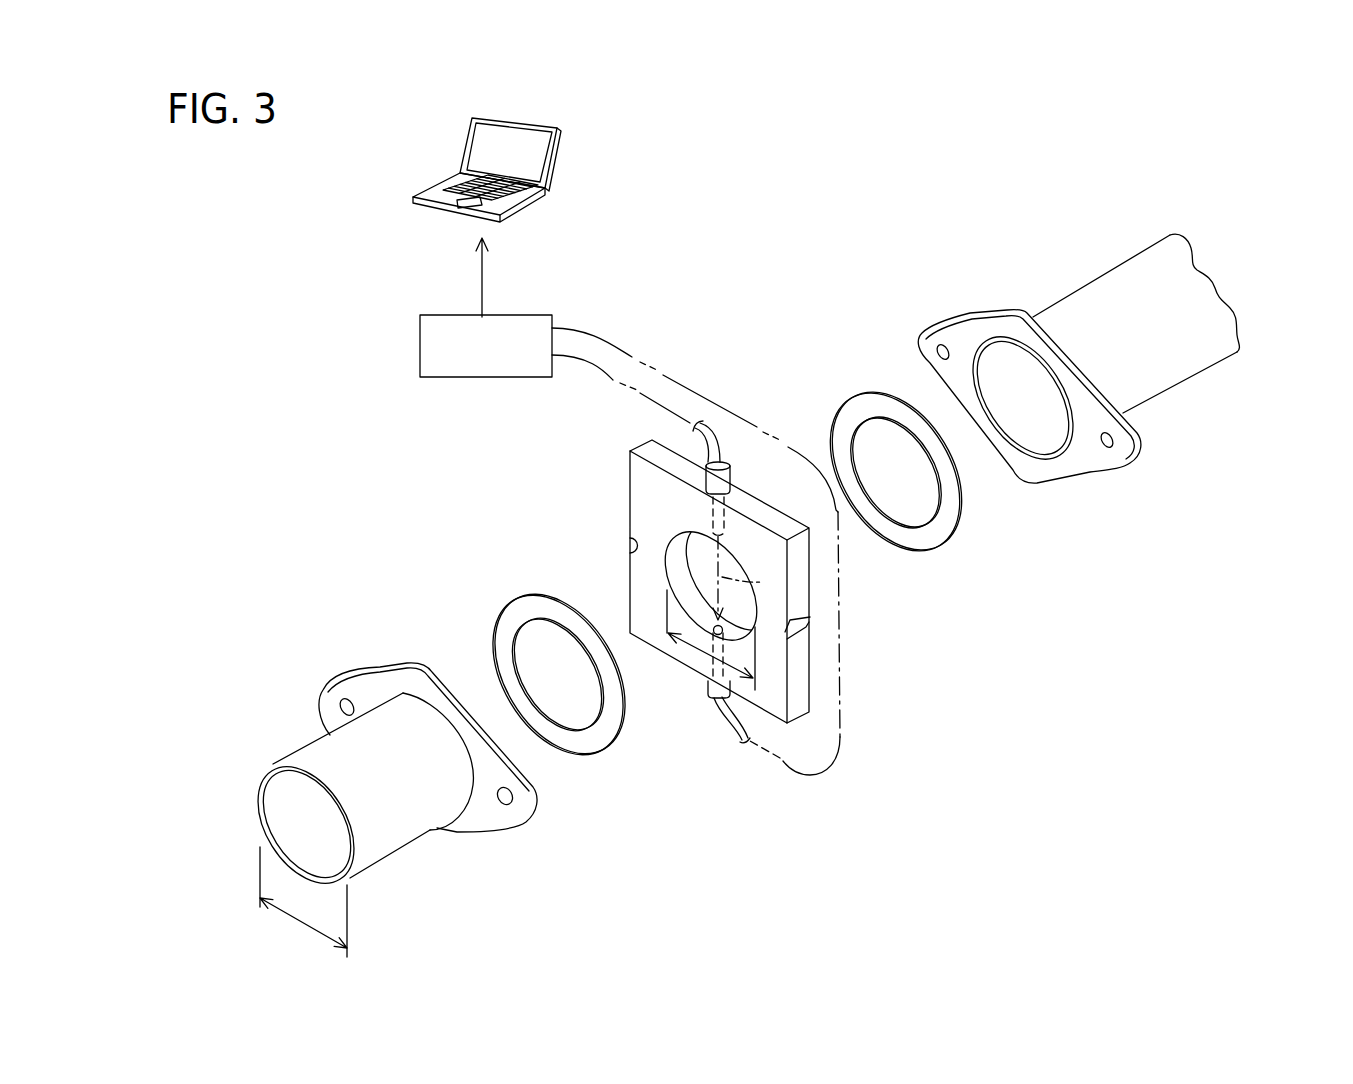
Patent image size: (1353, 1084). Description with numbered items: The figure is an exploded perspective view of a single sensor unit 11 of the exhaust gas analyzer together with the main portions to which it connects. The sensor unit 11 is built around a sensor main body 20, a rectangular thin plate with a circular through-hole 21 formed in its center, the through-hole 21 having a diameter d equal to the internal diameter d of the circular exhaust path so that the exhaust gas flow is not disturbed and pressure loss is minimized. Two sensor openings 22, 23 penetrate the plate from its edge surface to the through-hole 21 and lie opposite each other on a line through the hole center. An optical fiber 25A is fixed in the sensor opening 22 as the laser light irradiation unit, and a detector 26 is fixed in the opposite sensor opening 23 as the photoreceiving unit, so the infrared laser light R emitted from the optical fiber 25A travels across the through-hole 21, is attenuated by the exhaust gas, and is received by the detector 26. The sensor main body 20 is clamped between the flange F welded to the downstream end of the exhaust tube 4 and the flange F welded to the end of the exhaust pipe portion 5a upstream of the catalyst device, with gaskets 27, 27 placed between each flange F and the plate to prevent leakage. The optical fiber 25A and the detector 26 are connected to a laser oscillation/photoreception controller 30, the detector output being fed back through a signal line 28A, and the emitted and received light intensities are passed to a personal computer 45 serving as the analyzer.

The personal computer 45 is at (583, 157).
The laser oscillation/photoreception controller 30 is at (435, 393).
The signal line 28A is at (633, 353).
The optical fiber 25A is at (613, 380).
The sensor unit 11 is at (838, 678).
The sensor main body 20 is at (777, 703).
The through-hole 21 is at (675, 570).
The sensor opening 22 is at (706, 515).
The sensor opening 23 is at (702, 672).
The detector 26 is at (708, 702).
The gasket 27 is at (598, 747).
The exhaust tube 4 is at (317, 748).
The flange F is at (487, 827).
The exhaust pipe portion 5a is at (1177, 377).
The infrared laser light R is at (745, 577).
The diameter d is at (680, 663).